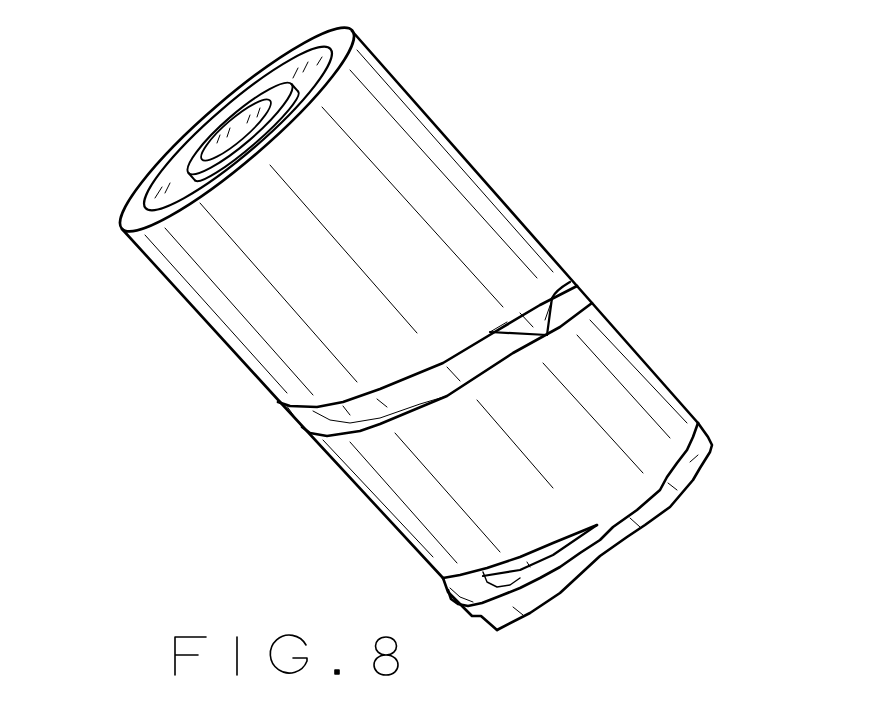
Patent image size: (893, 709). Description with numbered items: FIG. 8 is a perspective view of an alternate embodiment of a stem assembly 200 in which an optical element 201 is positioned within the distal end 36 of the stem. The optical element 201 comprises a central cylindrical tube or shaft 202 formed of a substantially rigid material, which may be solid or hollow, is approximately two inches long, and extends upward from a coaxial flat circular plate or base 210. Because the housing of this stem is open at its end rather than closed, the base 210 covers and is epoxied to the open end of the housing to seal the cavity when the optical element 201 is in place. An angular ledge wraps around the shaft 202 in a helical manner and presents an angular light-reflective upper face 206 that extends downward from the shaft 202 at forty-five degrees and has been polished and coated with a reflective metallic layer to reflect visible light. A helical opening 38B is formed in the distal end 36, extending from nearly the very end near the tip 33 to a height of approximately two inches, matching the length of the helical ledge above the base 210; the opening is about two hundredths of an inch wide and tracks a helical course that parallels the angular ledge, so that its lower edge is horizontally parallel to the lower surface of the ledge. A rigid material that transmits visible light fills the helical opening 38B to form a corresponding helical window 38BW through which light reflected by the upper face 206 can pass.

The stem assembly 200 is at (517, 119).
The optical element 201 is at (160, 104).
The central cylindrical tube or shaft 202 is at (277, 93).
The angular light-reflective upper face 206 is at (473, 360).
The tip 33 is at (720, 402).
The distal end 36 is at (240, 277).
The helical opening 38B is at (420, 588).
The helical window 38BW is at (590, 305).
The base 210 is at (670, 508).